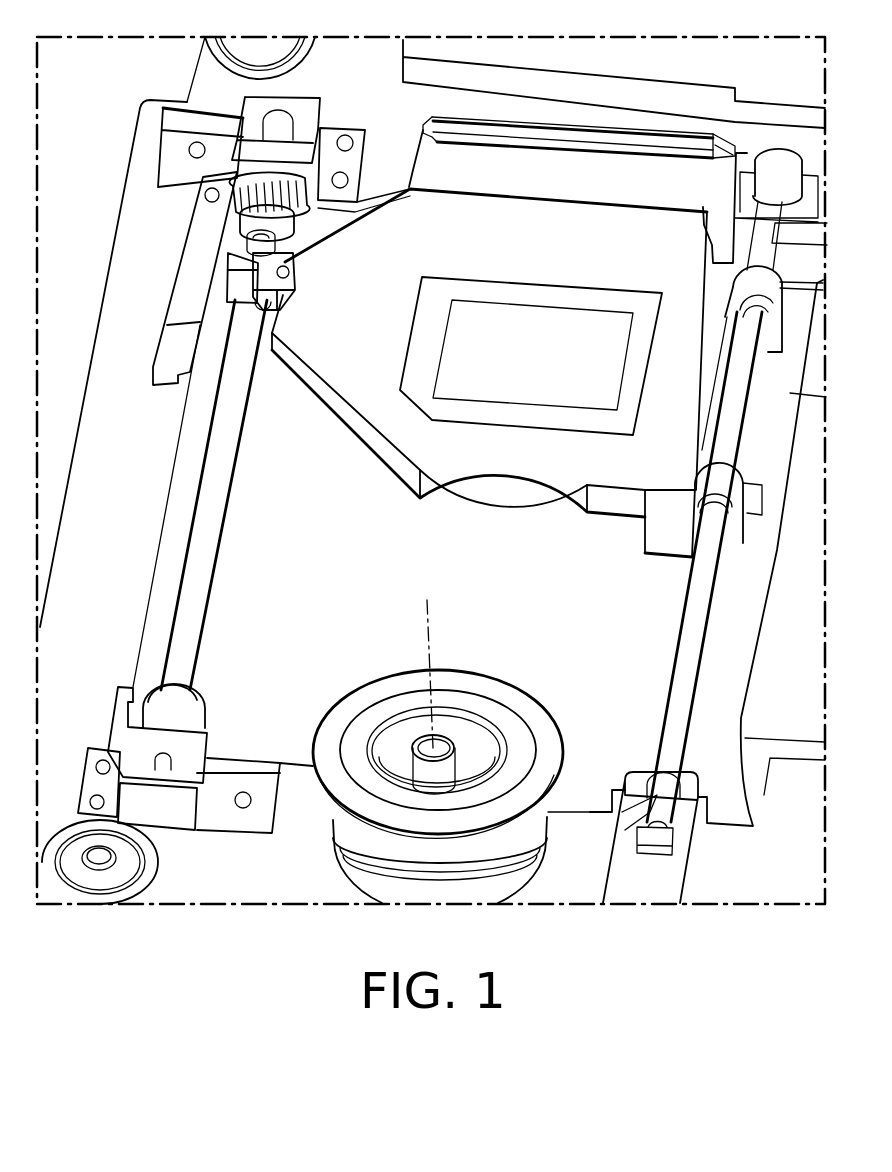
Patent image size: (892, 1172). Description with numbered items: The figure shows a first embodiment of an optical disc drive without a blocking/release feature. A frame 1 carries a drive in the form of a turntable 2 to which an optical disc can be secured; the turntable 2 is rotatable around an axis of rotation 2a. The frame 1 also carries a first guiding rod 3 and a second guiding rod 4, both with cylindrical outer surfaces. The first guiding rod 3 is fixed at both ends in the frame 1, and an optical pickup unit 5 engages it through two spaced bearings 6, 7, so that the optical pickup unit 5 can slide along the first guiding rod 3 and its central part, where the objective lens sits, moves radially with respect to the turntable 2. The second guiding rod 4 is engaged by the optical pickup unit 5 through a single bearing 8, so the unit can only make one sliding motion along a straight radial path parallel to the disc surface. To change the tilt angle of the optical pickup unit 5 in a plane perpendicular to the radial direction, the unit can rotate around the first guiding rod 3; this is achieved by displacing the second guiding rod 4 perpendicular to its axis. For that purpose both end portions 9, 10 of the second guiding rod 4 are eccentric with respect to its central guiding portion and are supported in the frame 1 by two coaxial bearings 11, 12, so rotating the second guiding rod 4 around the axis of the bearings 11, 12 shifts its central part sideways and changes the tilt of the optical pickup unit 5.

The frame 1 is at (255, 862).
The turntable 2 is at (505, 693).
The axis of rotation 2a is at (430, 614).
The first guiding rod 3 is at (695, 622).
The second guiding rod 4 is at (212, 493).
The optical pickup unit 5 is at (524, 366).
The bearing 6 is at (737, 487).
The bearing 7 is at (777, 293).
The bearing 8 is at (255, 268).
The end portion 9 is at (273, 228).
The end portion 10 is at (167, 705).
The bearing 11 is at (300, 152).
The bearing 12 is at (145, 743).